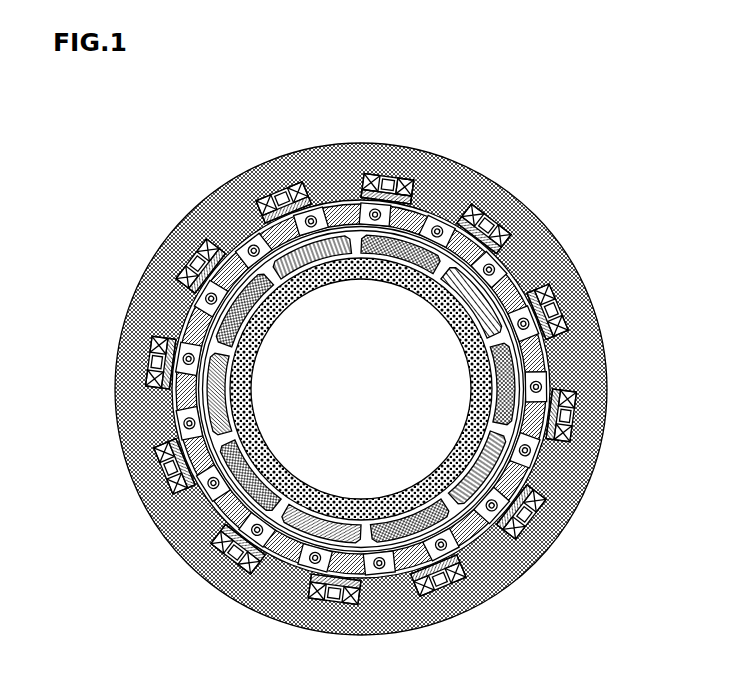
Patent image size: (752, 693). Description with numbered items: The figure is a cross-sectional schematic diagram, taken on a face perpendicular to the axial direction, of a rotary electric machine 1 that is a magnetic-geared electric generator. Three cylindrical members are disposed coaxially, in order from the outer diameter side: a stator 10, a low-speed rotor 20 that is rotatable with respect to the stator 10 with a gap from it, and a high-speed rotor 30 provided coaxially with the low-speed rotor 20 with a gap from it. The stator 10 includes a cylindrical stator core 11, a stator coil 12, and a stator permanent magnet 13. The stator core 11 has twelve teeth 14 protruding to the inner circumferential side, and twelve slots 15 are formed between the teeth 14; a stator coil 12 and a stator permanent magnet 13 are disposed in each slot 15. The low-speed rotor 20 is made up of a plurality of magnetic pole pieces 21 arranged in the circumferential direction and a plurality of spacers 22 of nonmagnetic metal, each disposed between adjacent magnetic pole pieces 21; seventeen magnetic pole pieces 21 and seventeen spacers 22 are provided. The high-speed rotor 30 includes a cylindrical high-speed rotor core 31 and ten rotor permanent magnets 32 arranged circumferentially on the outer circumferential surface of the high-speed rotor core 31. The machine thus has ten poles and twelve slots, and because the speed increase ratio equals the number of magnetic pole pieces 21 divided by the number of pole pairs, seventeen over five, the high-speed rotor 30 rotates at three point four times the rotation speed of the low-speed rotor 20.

The rotary electric machine 1 is at (153, 129).
The stator 10 is at (230, 171).
The stator core 11 is at (287, 162).
The stator coil 12 is at (403, 187).
The stator permanent magnet 13 is at (407, 191).
The teeth 14 is at (325, 176).
The slots 15 is at (378, 172).
The low-speed rotor 20 is at (492, 256).
The magnetic pole pieces 21 is at (540, 330).
The spacers 22 is at (538, 347).
The high-speed rotor 30 is at (500, 416).
The high-speed rotor core 31 is at (455, 498).
The rotor permanent magnets 32 is at (412, 523).